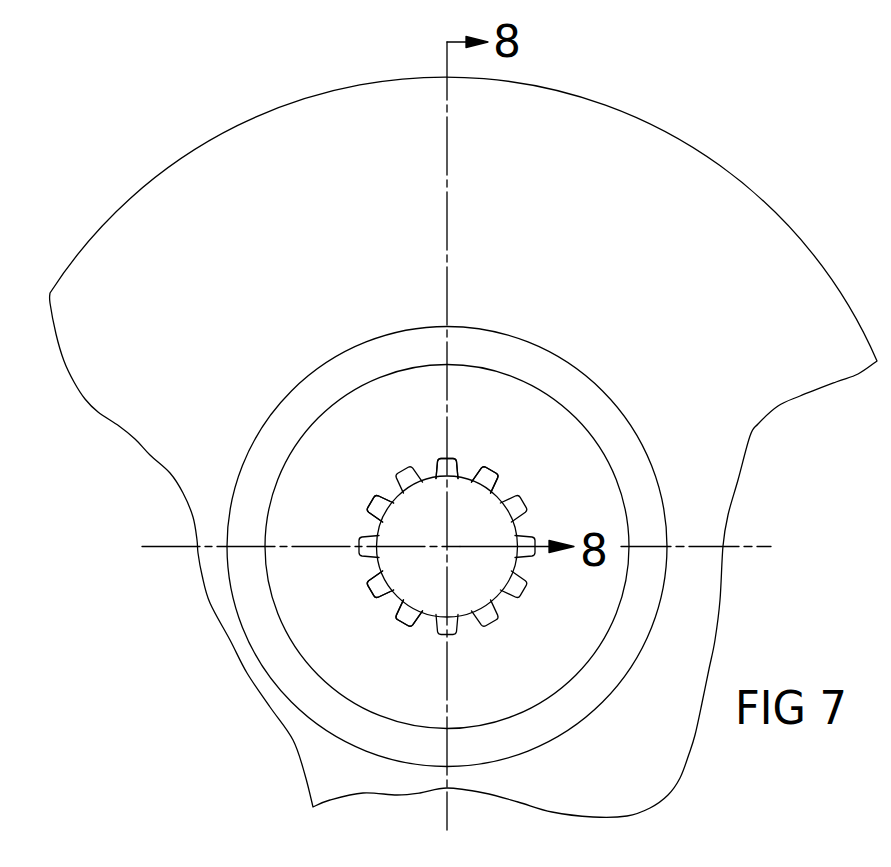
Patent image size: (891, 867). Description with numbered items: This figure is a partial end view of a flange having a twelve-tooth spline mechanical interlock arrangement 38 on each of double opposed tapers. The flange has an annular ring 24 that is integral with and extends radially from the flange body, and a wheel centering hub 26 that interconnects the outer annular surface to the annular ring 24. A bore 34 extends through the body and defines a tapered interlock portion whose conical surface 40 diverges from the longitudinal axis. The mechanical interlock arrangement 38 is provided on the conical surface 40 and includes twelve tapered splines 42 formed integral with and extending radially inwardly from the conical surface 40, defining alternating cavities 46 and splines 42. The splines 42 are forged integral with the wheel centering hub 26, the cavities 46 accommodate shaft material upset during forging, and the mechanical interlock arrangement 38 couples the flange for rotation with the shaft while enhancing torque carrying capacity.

The annular ring 24 is at (610, 141).
The wheel centering hub 26 is at (648, 595).
The bore 34 is at (438, 534).
The mechanical interlock arrangement 38 is at (518, 449).
The conical surface 40 is at (453, 458).
The tapered splines 42 is at (500, 493).
The cavities 46 is at (378, 508).